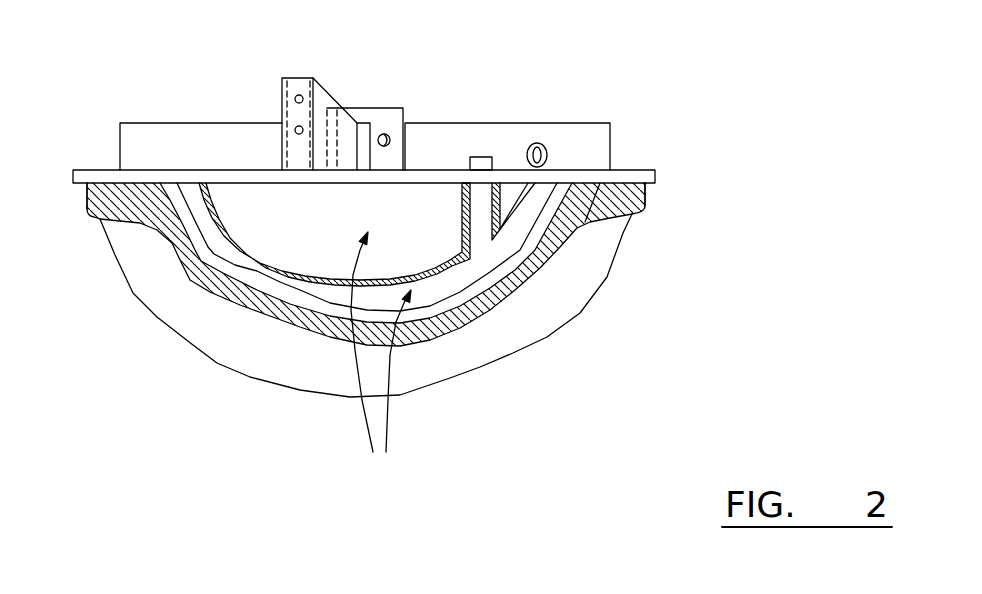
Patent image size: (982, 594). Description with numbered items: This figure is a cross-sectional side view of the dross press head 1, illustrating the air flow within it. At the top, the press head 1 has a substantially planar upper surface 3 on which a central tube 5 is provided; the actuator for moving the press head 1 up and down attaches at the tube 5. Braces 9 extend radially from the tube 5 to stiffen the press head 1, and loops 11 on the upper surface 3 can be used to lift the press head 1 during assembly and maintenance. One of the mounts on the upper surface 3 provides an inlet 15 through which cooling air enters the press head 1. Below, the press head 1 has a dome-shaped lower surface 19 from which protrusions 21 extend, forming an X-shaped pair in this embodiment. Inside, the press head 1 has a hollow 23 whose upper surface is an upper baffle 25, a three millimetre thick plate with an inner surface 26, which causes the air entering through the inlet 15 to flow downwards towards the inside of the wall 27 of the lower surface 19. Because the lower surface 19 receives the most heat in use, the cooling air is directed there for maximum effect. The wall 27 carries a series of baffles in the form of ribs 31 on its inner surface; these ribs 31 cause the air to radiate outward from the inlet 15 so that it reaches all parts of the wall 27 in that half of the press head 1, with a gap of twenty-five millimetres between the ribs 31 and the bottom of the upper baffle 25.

The press head 1 is at (366, 302).
The upper surface 3 is at (364, 107).
The central tube 5 is at (342, 85).
The braces 9 is at (357, 97).
The loops 11 is at (575, 94).
The inlet 15 is at (502, 132).
The lower surface 19 is at (338, 315).
The protrusions 21 is at (401, 280).
The hollow 23 is at (381, 355).
The upper baffle 25 is at (334, 143).
The inner surface 26 is at (260, 364).
The wall 27 is at (382, 302).
The ribs 31 is at (380, 301).